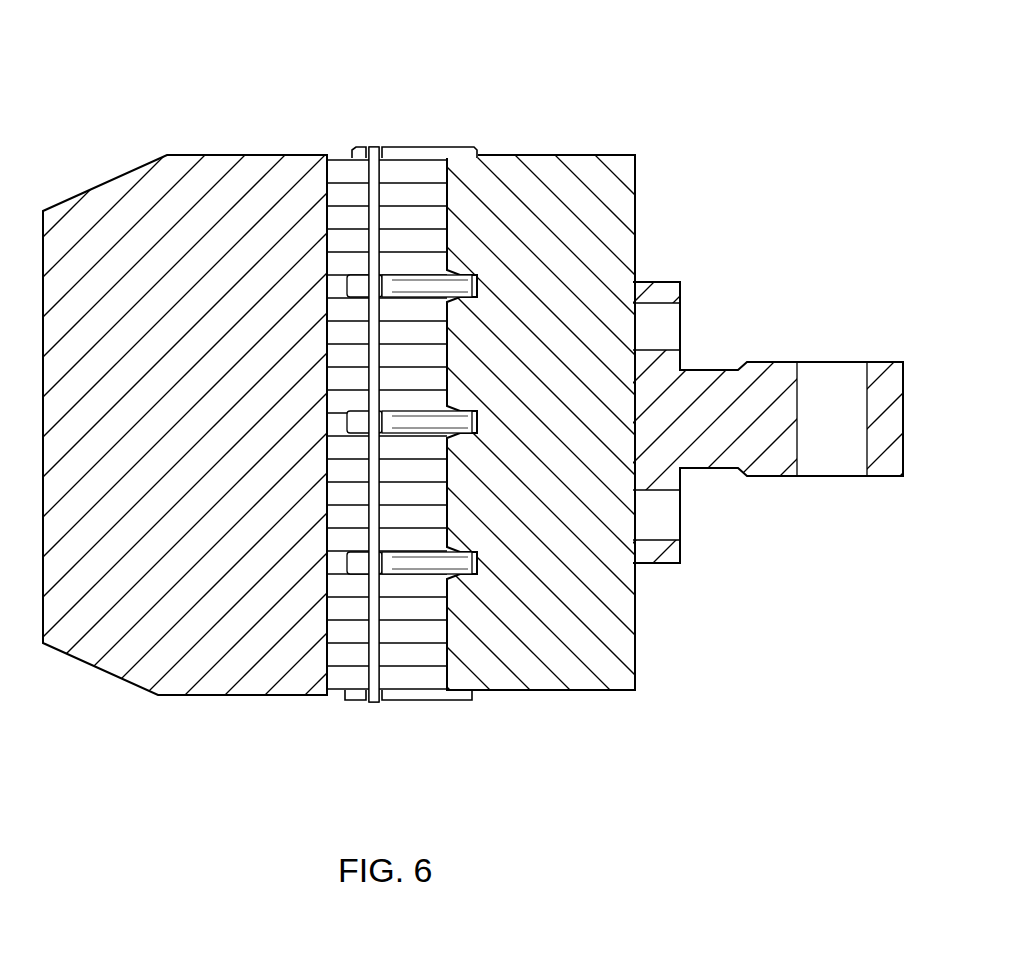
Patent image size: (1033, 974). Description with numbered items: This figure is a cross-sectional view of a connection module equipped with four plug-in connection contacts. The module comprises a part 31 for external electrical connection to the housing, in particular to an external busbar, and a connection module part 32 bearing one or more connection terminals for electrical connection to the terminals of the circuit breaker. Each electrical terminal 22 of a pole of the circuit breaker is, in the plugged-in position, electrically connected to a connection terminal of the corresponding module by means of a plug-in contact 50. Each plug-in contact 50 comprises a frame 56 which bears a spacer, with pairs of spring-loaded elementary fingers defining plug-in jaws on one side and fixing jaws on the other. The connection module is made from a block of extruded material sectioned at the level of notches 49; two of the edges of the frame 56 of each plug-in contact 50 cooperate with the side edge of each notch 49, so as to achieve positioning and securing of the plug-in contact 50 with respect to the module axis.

The electrical terminal 22 is at (153, 567).
The part for external electrical connection 31 is at (752, 393).
The connection module part 32 is at (560, 202).
The notch 49 is at (475, 272).
The plug-in contact 50 is at (402, 363).
The frame 56 is at (450, 567).